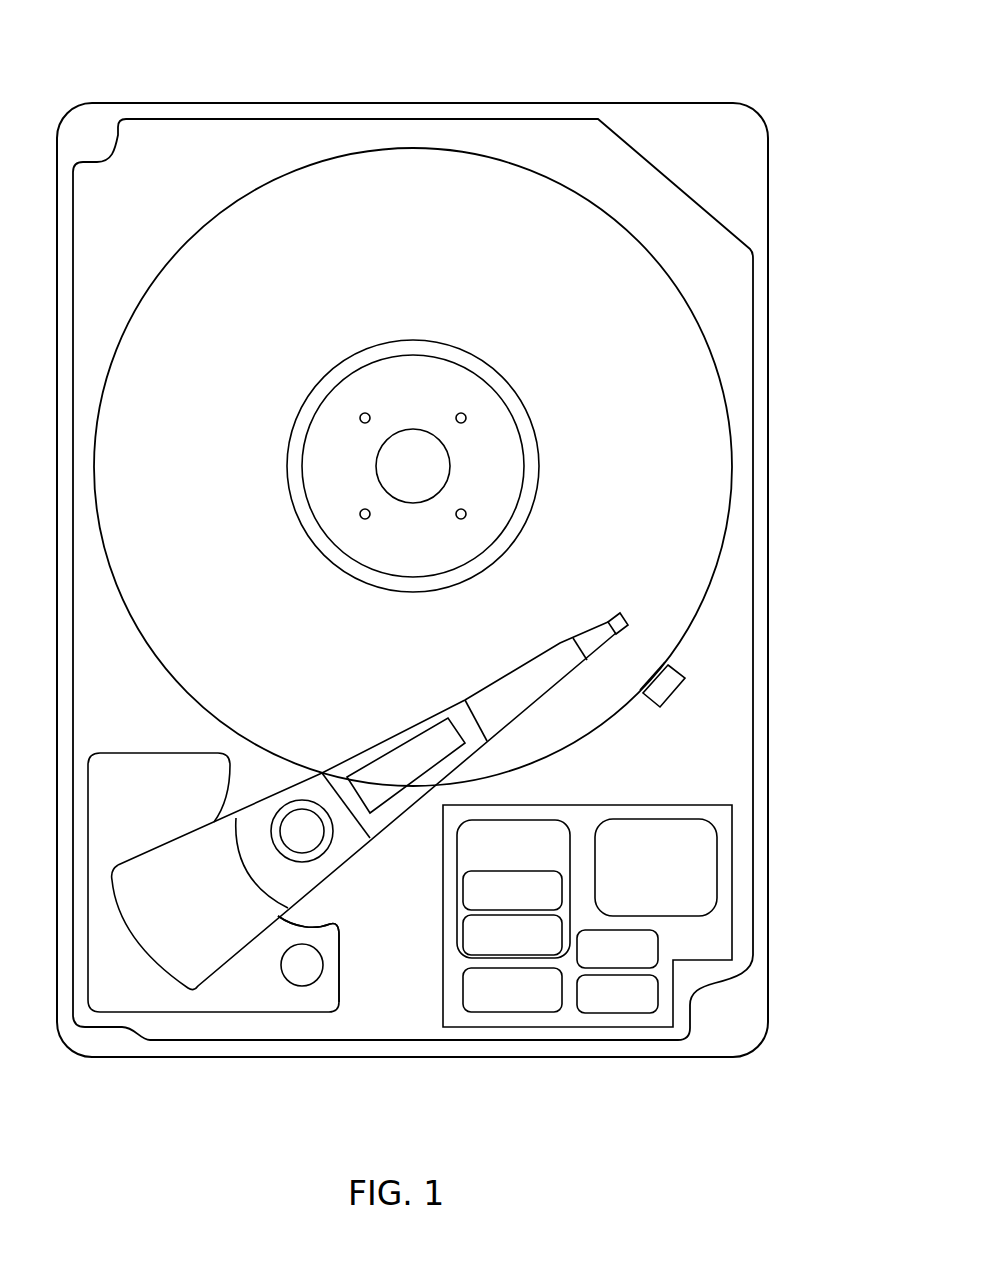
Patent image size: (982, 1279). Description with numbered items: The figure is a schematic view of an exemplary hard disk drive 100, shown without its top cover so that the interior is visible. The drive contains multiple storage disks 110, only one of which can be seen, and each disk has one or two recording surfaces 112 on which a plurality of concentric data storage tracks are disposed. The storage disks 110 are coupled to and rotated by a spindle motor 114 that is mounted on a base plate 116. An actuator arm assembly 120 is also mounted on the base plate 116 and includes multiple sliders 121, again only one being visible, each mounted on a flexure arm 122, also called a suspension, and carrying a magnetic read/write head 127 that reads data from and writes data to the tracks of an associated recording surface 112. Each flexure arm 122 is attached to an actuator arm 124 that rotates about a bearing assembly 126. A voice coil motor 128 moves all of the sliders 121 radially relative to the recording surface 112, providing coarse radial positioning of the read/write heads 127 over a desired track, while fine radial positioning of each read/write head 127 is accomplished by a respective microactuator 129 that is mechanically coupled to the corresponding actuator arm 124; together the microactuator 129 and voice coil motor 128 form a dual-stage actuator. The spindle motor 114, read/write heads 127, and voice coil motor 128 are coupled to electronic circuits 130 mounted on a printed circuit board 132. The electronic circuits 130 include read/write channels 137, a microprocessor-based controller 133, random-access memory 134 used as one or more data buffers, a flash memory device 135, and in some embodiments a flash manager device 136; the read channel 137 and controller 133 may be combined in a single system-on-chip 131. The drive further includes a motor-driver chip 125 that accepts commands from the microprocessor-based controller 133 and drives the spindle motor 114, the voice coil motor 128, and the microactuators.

The hard disk drive 100 is at (143, 52).
The storage disk 110 is at (413, 466).
The recording surface 112 is at (172, 168).
The spindle motor 114 is at (509, 406).
The base plate 116 is at (755, 606).
The actuator arm assembly 120 is at (400, 709).
The slider 121 is at (628, 618).
The flexure arm 122 is at (589, 625).
The actuator arm 124 is at (485, 684).
The motor-driver chip 125 is at (512, 990).
The bearing assembly 126 is at (330, 882).
The magnetic read/write head 127 is at (618, 583).
The voice coil motor 128 is at (339, 953).
The microactuator 129 is at (306, 987).
The electronic circuits 130 is at (592, 811).
The system-on-chip 131 is at (513, 889).
The printed circuit board 132 is at (667, 805).
The microprocessor-based controller 133 is at (512, 890).
The random-access memory 134 is at (617, 949).
The flash memory device 135 is at (656, 867).
The flash manager device 136 is at (617, 994).
The read/write channel 137 is at (512, 935).